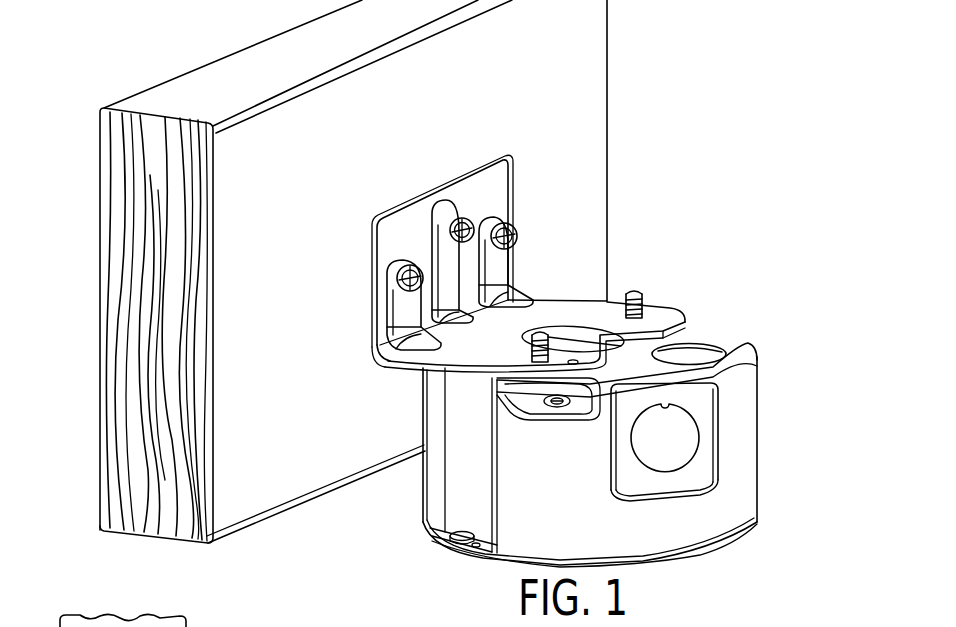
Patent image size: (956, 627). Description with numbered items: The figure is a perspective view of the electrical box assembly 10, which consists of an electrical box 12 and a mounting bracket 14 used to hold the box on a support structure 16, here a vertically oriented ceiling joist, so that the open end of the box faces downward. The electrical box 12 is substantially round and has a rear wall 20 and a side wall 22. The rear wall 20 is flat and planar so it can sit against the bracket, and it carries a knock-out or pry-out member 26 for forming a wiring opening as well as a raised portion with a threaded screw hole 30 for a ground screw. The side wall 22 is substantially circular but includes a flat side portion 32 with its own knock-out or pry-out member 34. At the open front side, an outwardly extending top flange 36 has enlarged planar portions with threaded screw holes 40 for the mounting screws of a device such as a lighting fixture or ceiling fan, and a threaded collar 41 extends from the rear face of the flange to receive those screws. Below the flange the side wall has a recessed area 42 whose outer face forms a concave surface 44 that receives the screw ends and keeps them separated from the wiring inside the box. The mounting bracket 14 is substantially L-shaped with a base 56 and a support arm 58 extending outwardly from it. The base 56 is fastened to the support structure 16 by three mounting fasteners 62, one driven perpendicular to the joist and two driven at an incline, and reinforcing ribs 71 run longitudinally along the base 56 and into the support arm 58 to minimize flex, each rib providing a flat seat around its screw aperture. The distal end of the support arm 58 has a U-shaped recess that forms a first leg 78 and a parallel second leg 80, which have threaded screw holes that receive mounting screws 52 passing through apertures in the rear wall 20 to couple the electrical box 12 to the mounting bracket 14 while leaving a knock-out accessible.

The electrical box assembly 10 is at (754, 284).
The electrical box 12 is at (594, 444).
The mounting bracket 14 is at (508, 258).
The support structure 16 is at (573, 82).
The rear wall 20 is at (727, 340).
The side wall 22 is at (742, 484).
The knock-out or pry-out member 26 is at (698, 353).
The threaded screw hole 30 is at (560, 402).
The flat side portion 32 is at (700, 408).
The knock-out or pry-out member 34 is at (672, 455).
The top flange 36 is at (646, 560).
The threaded screw hole 40 is at (467, 530).
The threaded collar 41 is at (433, 540).
The recessed area 42 is at (465, 473).
The concave surface 44 is at (453, 502).
The mounting screw 52 is at (540, 335).
The base 56 is at (400, 228).
The support arm 58 is at (612, 300).
The mounting fastener 62 is at (397, 281).
The reinforcing rib 71 is at (440, 248).
The first leg 78 is at (562, 358).
The second leg 80 is at (658, 316).